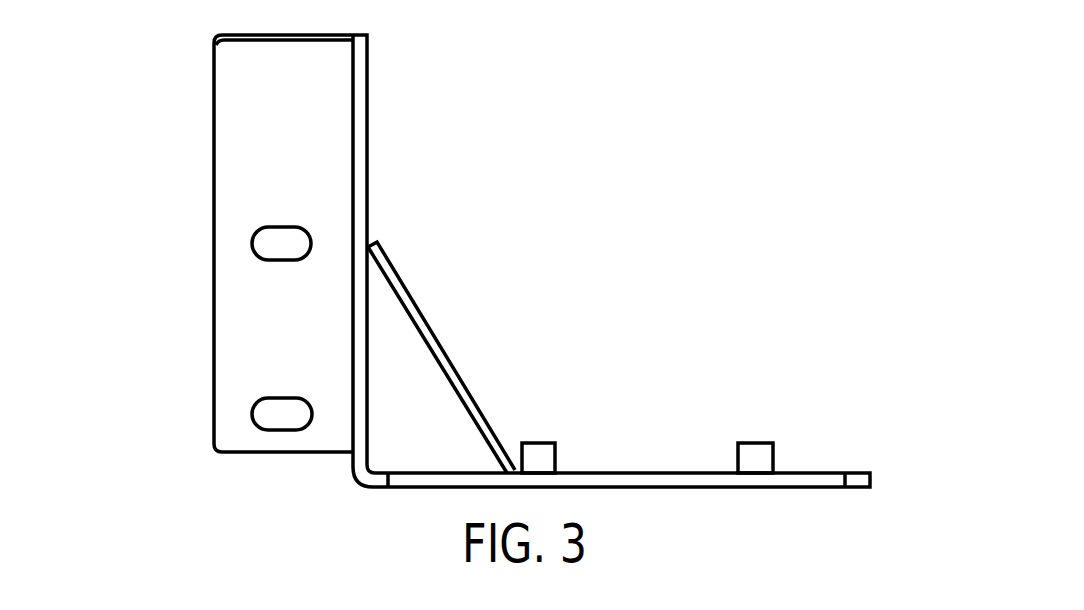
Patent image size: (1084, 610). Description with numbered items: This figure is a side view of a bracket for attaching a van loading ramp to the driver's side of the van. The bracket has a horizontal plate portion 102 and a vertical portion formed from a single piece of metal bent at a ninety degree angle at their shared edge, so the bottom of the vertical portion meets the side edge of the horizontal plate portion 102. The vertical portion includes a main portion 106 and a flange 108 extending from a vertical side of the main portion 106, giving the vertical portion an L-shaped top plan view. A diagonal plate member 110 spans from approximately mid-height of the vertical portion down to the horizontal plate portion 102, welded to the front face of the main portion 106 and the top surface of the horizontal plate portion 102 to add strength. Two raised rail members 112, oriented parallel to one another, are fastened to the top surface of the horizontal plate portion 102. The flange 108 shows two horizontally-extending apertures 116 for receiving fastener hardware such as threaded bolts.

The horizontal plate portion 102 is at (808, 478).
The main portion 106 is at (366, 148).
The flange 108 is at (292, 140).
The diagonal plate member 110 is at (445, 342).
The raised rail members 112 is at (541, 455).
The horizontally-extending apertures 116 is at (270, 240).